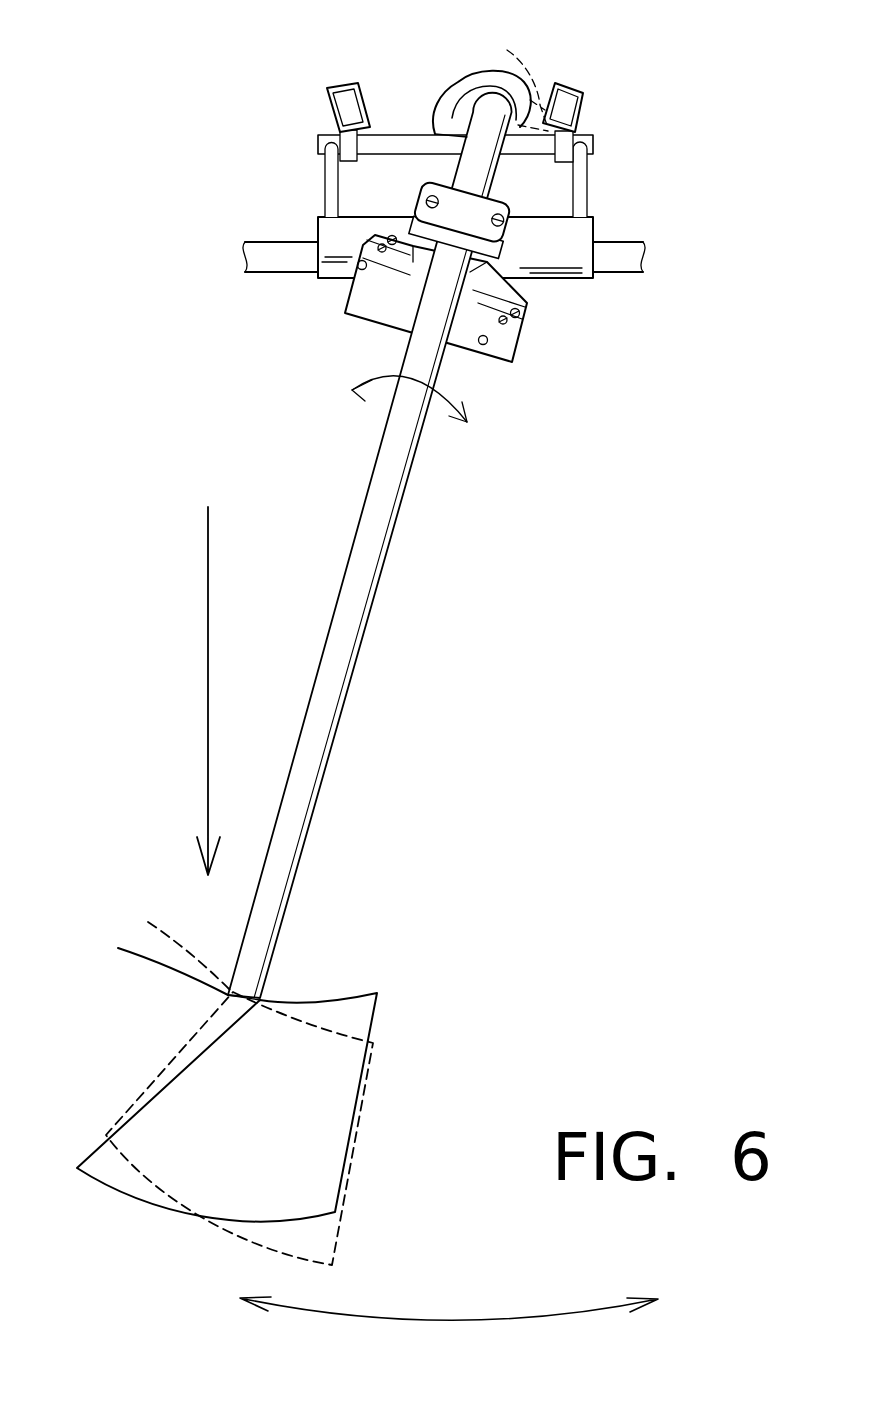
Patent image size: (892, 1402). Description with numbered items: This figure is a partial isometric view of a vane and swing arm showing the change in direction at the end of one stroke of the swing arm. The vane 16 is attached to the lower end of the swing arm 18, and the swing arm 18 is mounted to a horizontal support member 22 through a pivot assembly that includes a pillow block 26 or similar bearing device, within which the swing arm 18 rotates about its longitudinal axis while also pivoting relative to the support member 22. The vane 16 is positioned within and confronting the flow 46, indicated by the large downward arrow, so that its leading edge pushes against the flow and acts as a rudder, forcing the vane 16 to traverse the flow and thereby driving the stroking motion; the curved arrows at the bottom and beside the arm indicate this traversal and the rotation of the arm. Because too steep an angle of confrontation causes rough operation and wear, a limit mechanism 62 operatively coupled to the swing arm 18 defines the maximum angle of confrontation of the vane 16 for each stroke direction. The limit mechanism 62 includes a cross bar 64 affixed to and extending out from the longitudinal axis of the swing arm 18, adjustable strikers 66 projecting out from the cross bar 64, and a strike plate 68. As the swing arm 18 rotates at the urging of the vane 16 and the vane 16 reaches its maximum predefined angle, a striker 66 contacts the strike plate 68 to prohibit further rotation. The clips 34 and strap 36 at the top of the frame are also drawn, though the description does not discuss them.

The vane 16 is at (143, 943).
The swing arm 18 is at (353, 618).
The horizontal support member 22 is at (618, 247).
The pillow block 26 is at (423, 184).
The clips 34 is at (348, 97).
The strap 36 is at (490, 72).
The flow 46 is at (207, 752).
The limit mechanism 62 is at (392, 319).
The cross bar 64 is at (400, 278).
The adjustable strikers 66 is at (358, 266).
The strike plate 68 is at (513, 342).